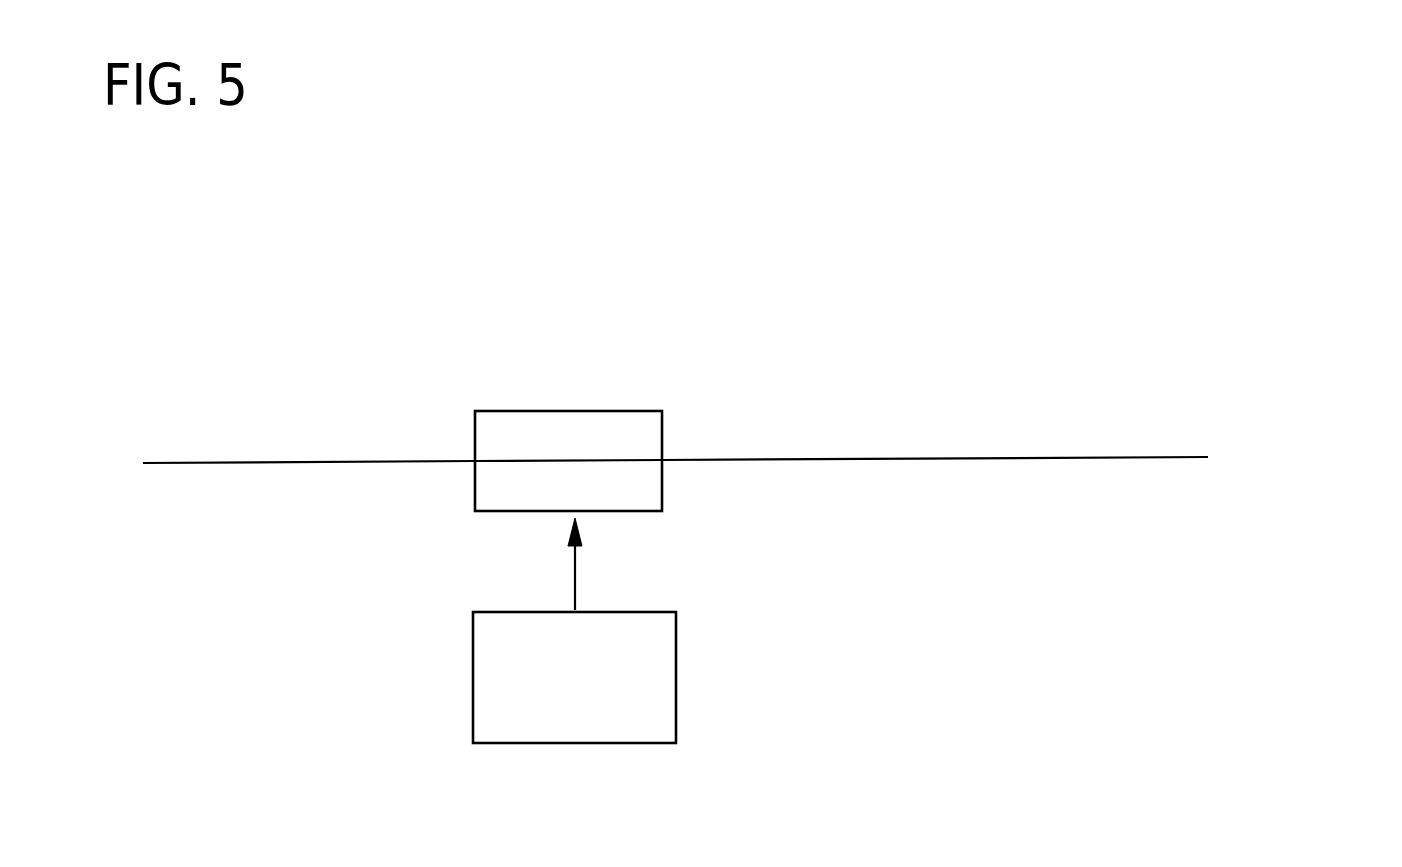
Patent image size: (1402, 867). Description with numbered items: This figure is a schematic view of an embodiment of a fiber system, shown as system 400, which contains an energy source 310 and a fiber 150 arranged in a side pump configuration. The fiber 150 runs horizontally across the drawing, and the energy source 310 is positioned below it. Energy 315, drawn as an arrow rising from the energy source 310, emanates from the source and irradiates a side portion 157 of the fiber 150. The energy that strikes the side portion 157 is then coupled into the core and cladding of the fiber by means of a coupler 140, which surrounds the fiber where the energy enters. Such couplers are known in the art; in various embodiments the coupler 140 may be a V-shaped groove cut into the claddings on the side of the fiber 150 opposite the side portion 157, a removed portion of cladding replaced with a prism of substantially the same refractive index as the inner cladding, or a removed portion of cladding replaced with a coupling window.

The coupler 140 is at (622, 439).
The fiber 150 is at (928, 458).
The side portion 157 is at (527, 465).
The energy source 310 is at (608, 693).
The energy 315 is at (593, 565).
The system 400 is at (1318, 453).